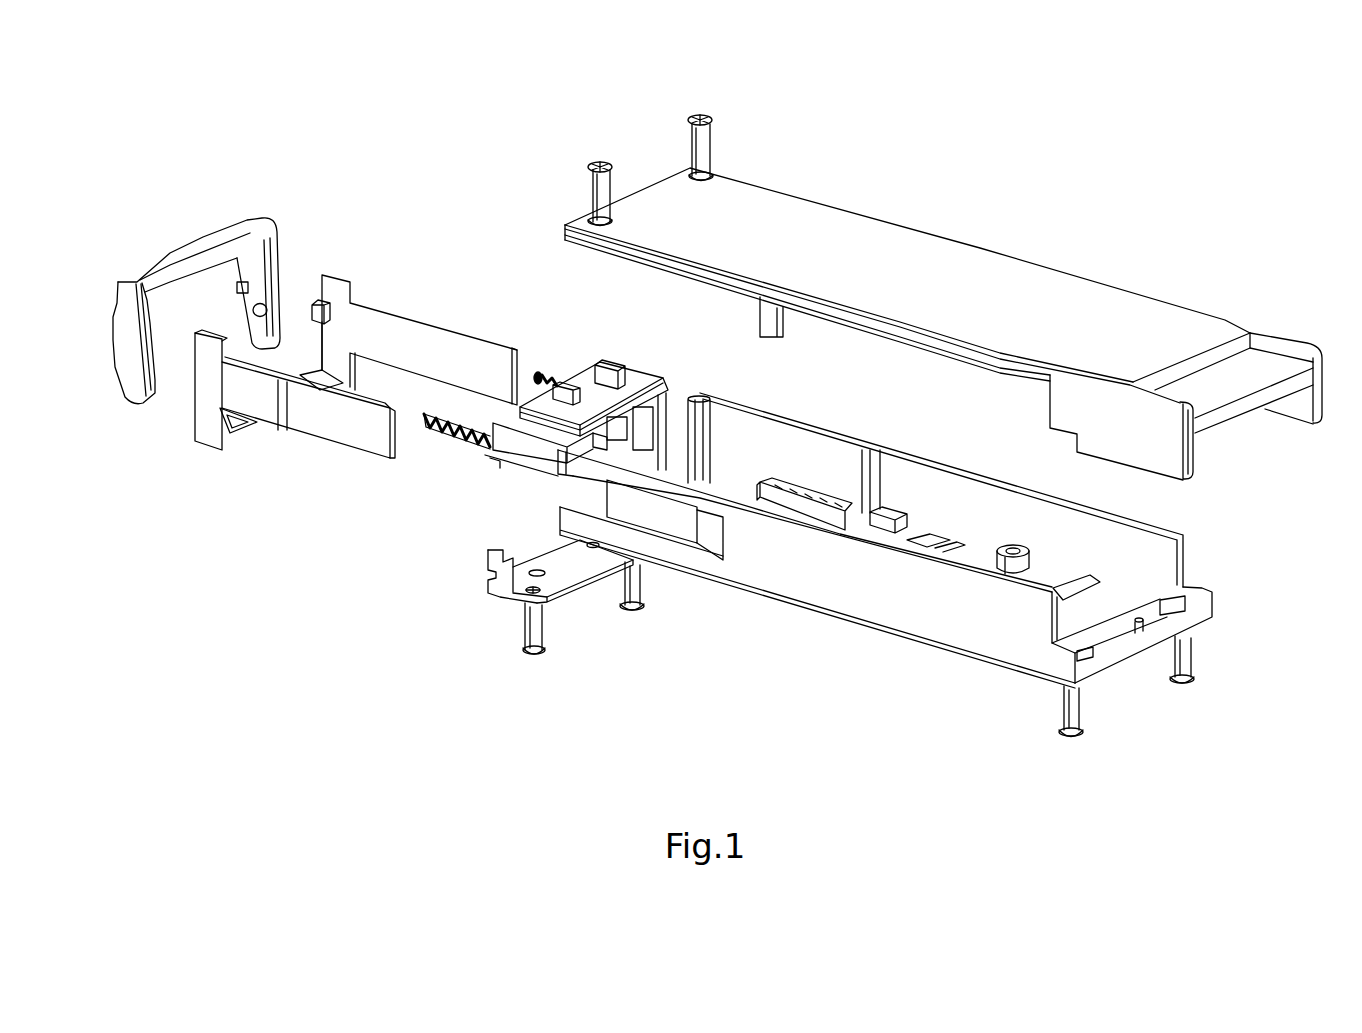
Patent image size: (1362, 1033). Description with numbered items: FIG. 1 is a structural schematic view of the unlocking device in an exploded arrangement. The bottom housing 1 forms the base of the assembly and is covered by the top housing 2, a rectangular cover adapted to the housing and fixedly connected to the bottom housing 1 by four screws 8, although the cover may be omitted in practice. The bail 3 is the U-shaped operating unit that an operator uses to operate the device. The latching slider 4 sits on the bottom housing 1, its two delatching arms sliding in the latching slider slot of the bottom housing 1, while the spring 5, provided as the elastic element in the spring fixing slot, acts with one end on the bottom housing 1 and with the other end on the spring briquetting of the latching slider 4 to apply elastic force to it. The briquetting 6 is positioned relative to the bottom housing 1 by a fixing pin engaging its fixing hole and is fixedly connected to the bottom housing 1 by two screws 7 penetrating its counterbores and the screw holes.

The bottom housing 1 is at (772, 573).
The top housing 2 is at (768, 195).
The bail 3 is at (133, 357).
The latching slider 4 is at (313, 413).
The spring 5 is at (440, 435).
The briquetting 6 is at (553, 608).
The screws 7 is at (630, 575).
The screws 8 is at (613, 162).